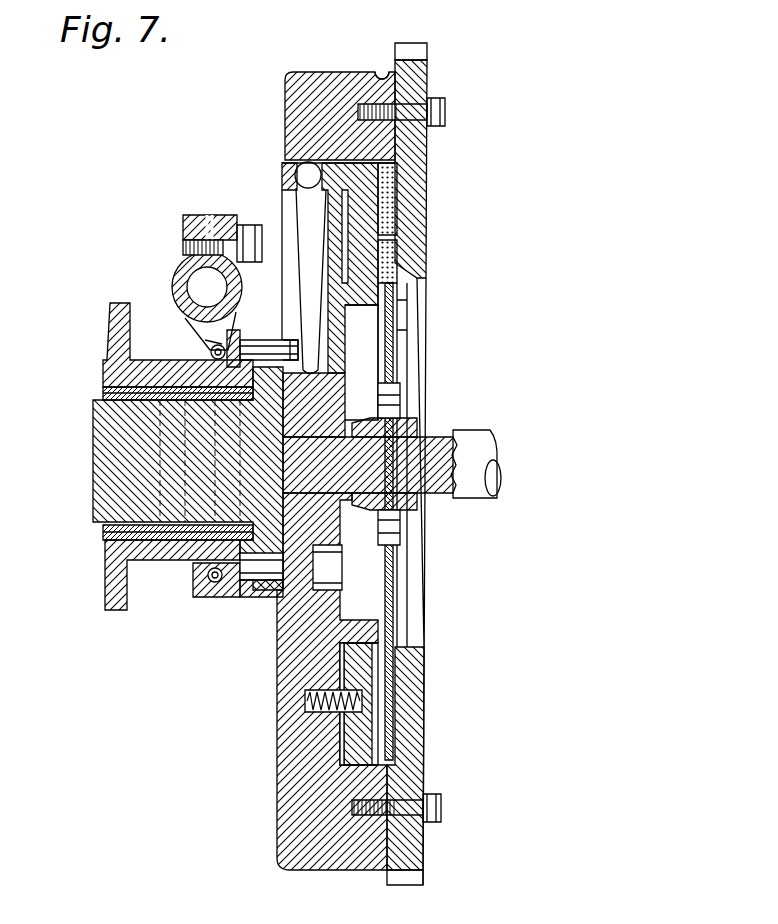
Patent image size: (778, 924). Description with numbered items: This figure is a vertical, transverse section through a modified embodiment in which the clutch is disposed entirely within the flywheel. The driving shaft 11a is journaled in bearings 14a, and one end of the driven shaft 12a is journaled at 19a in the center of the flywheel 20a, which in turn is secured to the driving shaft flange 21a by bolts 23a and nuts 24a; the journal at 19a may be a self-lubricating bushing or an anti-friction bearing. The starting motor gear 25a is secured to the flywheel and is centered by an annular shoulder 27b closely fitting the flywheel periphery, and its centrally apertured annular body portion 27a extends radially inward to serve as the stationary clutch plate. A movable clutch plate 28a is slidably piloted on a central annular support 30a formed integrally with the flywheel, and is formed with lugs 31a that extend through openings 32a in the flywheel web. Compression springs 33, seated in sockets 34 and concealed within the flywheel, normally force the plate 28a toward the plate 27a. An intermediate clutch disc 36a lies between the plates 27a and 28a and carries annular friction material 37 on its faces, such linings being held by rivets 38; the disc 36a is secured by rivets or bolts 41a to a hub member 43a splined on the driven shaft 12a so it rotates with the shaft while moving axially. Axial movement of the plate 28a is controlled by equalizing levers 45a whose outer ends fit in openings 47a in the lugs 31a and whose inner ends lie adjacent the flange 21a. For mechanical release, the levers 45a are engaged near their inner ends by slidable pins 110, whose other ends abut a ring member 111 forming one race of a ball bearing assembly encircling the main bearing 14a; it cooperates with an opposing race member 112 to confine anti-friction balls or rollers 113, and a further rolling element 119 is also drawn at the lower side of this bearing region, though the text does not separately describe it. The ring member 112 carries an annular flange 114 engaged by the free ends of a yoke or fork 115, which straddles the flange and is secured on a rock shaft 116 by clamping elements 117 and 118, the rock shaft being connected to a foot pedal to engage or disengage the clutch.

The driving shaft 11a is at (105, 432).
The driven shaft 12a is at (476, 440).
The bearings 14a is at (107, 565).
The journal 19a is at (365, 512).
The flywheel 20a is at (296, 100).
The driving shaft flange 21a is at (275, 585).
The bolts 23a is at (272, 600).
The nuts 24a is at (305, 645).
The starting motor gear 25a is at (428, 52).
The annular body portion 27a is at (418, 178).
The annular shoulder 27b is at (382, 72).
The movable clutch plate 28a is at (398, 283).
The central annular support 30a is at (362, 300).
The lugs 31a is at (305, 260).
The openings 32a is at (284, 185).
The compression springs 33 is at (340, 700).
The sockets 34 is at (300, 694).
The intermediate clutch disc 36a is at (408, 322).
The friction material lining 37 is at (398, 218).
The rivets 38 is at (398, 260).
The rivets or bolts 41a is at (402, 396).
The hub member 43a is at (400, 418).
The equalizing levers 45a is at (300, 230).
The openings 47a is at (298, 168).
The slidable pins 110 is at (290, 340).
The ring member 111 is at (245, 343).
The ring or race member 112 is at (212, 342).
The anti-friction balls or rollers 113 is at (211, 350).
The annular flange 114 is at (170, 358).
The yoke or fork 115 is at (192, 330).
The rock shaft 116 is at (195, 270).
The clamping element 117 is at (190, 220).
The clamping element 118 is at (240, 240).
The ball 119 is at (240, 597).